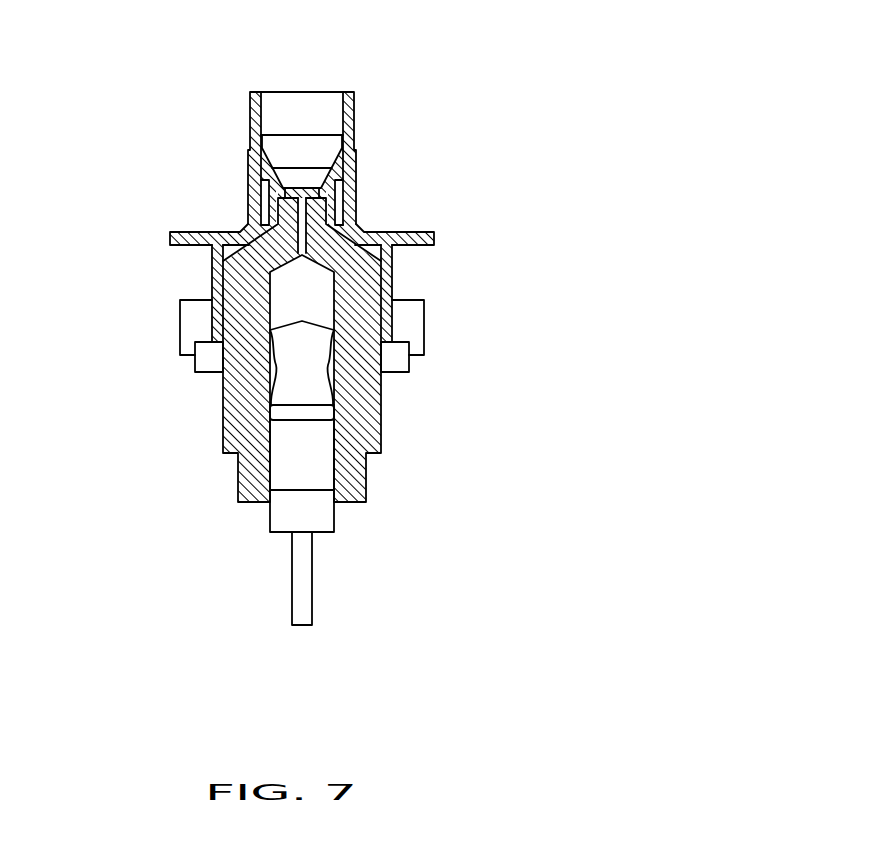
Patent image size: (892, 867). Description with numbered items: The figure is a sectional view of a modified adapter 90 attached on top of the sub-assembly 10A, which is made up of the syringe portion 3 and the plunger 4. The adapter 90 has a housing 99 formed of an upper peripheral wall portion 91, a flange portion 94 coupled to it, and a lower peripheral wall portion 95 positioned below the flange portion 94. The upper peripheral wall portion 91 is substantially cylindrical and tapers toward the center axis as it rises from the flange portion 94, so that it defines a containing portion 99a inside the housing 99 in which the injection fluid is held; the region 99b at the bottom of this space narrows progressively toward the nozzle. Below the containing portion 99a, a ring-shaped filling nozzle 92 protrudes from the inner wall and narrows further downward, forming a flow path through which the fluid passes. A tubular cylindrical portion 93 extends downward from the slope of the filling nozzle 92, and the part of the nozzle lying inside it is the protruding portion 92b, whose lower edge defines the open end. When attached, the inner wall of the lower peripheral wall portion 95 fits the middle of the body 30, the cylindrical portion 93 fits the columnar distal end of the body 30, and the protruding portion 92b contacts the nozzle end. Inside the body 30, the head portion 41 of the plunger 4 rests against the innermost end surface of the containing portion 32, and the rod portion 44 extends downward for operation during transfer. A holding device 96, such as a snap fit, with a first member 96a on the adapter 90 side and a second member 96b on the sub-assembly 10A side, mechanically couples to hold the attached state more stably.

The sub-assembly 10A is at (76, 481).
The syringe portion 3 is at (206, 481).
The plunger 4 is at (217, 589).
The body 30 is at (367, 492).
The containing portion 32 is at (288, 282).
The head portion 41 is at (285, 377).
The rod portion 44 is at (313, 625).
The adapter 90 is at (429, 144).
The upper peripheral wall portion 91 is at (248, 175).
The filling nozzle 92 is at (288, 190).
The protruding portion 92b is at (302, 193).
The cylindrical portion 93 is at (335, 203).
The flange portion 94 is at (407, 232).
The lower peripheral wall portion 95 is at (392, 288).
The holding device 96 is at (63, 378).
The first member 96a is at (193, 330).
The second member 96b is at (203, 362).
The housing 99 is at (353, 110).
The containing portion 99a is at (273, 105).
The cap skirt 99b is at (221, 254).